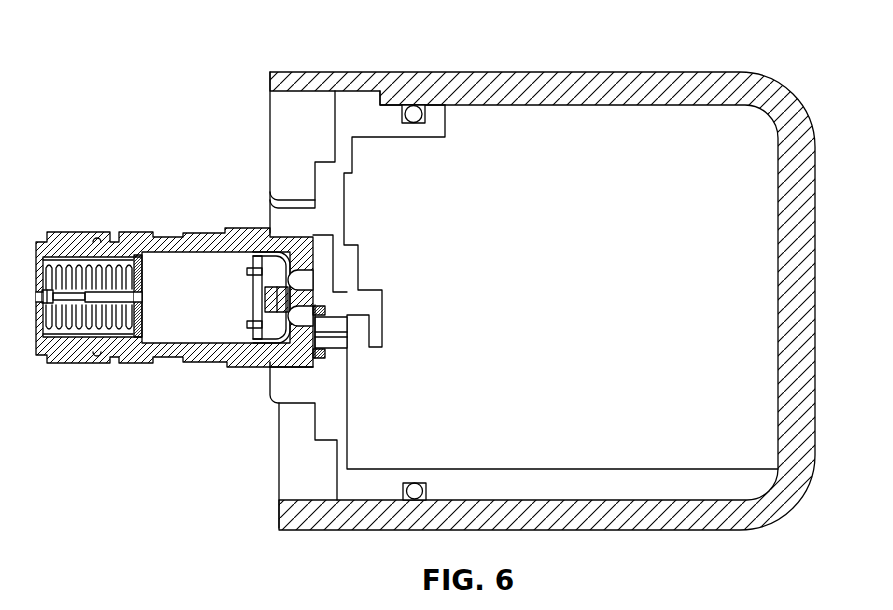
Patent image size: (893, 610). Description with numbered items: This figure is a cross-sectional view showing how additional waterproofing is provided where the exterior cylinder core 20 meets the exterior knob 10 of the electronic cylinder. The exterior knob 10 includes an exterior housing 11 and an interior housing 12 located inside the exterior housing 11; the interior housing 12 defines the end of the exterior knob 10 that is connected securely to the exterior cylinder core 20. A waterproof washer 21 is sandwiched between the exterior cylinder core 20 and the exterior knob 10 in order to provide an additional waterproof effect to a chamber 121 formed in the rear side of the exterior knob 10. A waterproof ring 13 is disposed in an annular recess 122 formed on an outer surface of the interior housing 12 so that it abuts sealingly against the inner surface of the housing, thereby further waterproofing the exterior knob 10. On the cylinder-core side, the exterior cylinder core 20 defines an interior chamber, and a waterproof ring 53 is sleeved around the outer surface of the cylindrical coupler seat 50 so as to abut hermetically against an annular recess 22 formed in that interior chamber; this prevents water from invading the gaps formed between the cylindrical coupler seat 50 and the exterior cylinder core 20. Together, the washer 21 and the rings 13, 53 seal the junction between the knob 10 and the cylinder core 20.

The exterior knob 10 is at (542, 274).
The exterior housing 11 is at (552, 88).
The interior housing 12 is at (524, 285).
The chamber 121 is at (270, 369).
The annular recess 122 is at (440, 93).
The waterproof ring 13 is at (414, 104).
The exterior cylinder core 20 is at (191, 300).
The waterproof washer 21 is at (286, 309).
The annular recess 22 is at (148, 244).
The cylindrical coupler seat 50 is at (68, 248).
The waterproof ring 53 is at (99, 245).